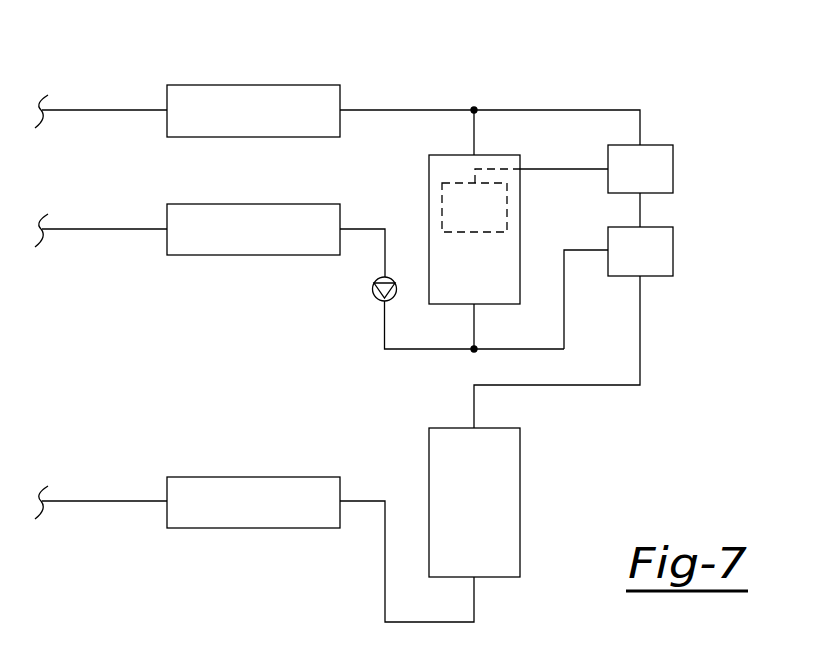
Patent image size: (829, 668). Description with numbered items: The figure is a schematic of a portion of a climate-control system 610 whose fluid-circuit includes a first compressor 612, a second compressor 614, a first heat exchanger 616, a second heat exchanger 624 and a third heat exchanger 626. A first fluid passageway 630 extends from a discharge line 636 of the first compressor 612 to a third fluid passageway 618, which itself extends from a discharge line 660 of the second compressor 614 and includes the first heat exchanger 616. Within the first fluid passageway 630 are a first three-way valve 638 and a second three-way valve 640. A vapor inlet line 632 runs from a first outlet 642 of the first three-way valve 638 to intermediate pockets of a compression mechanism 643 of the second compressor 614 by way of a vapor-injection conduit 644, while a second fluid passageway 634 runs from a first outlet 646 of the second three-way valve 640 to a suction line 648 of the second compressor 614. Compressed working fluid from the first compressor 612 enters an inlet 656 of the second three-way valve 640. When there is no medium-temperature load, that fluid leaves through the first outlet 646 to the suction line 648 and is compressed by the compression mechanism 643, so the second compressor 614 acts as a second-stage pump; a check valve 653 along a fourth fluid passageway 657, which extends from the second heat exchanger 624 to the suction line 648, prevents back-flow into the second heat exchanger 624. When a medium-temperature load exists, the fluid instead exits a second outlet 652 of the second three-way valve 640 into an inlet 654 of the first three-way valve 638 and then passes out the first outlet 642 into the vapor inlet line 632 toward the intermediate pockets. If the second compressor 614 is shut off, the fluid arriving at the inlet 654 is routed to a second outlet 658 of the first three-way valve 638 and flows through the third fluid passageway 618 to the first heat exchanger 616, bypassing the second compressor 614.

The climate-control system 610 is at (625, 88).
The first compressor 612 is at (555, 450).
The second compressor 614 is at (410, 208).
The first heat exchanger 616 is at (167, 98).
The third fluid passageway 618 is at (357, 98).
The second heat exchanger 624 is at (167, 217).
The third heat exchanger 626 is at (167, 490).
The first fluid passageway 630 is at (670, 367).
The vapor inlet line 632 is at (530, 158).
The second fluid passageway 634 is at (558, 254).
The discharge line 636 is at (474, 408).
The first 3-way valve 638 is at (688, 180).
The second 3-way valve 640 is at (703, 267).
The first outlet 642 is at (608, 170).
The compression mechanism 643 is at (474, 232).
The vapor-injection conduit 644 is at (495, 168).
The first outlet 646 is at (608, 252).
The suction line 648 is at (474, 325).
The second outlet 652 is at (640, 222).
The check valve 653 is at (373, 293).
The inlet 654 is at (643, 195).
The inlet 656 is at (643, 278).
The fourth fluid passageway 657 is at (362, 348).
The second outlet 658 is at (640, 140).
The discharge line 660 is at (474, 132).